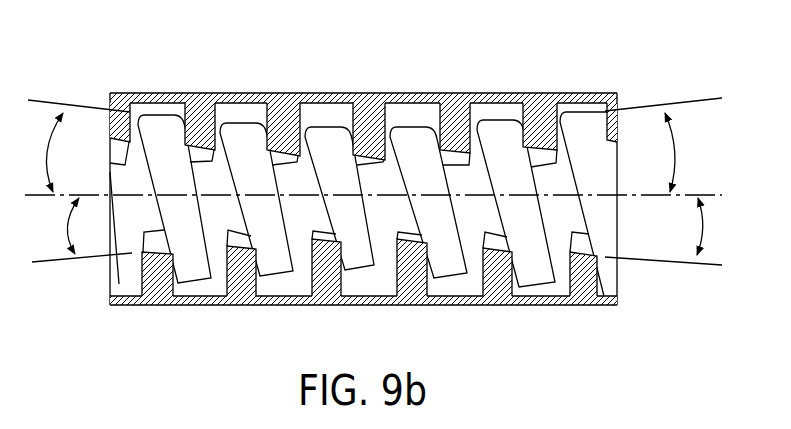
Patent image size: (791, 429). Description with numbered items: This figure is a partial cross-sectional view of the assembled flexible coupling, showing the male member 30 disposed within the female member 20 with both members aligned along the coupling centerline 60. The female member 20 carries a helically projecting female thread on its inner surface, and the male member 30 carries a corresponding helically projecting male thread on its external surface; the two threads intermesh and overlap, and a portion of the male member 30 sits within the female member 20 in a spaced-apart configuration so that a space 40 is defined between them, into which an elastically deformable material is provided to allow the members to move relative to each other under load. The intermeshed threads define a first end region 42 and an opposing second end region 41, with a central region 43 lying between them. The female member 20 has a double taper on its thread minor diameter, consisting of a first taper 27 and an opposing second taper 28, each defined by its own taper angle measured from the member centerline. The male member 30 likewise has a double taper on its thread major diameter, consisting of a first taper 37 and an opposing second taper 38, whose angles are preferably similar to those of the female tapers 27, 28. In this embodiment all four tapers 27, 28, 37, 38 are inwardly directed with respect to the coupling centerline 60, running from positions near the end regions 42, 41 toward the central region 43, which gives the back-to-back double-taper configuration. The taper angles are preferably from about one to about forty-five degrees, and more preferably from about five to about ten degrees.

The female member 20 is at (361, 205).
The male member 30 is at (358, 231).
The space 40 is at (362, 280).
The second end region 41 is at (157, 314).
The first end region 42 is at (575, 314).
The central region 43 is at (405, 314).
The second taper 38 is at (90, 108).
The first taper 37 is at (642, 103).
The second taper 28 is at (93, 260).
The first taper 27 is at (650, 265).
The coupling centerline 60 is at (37, 193).